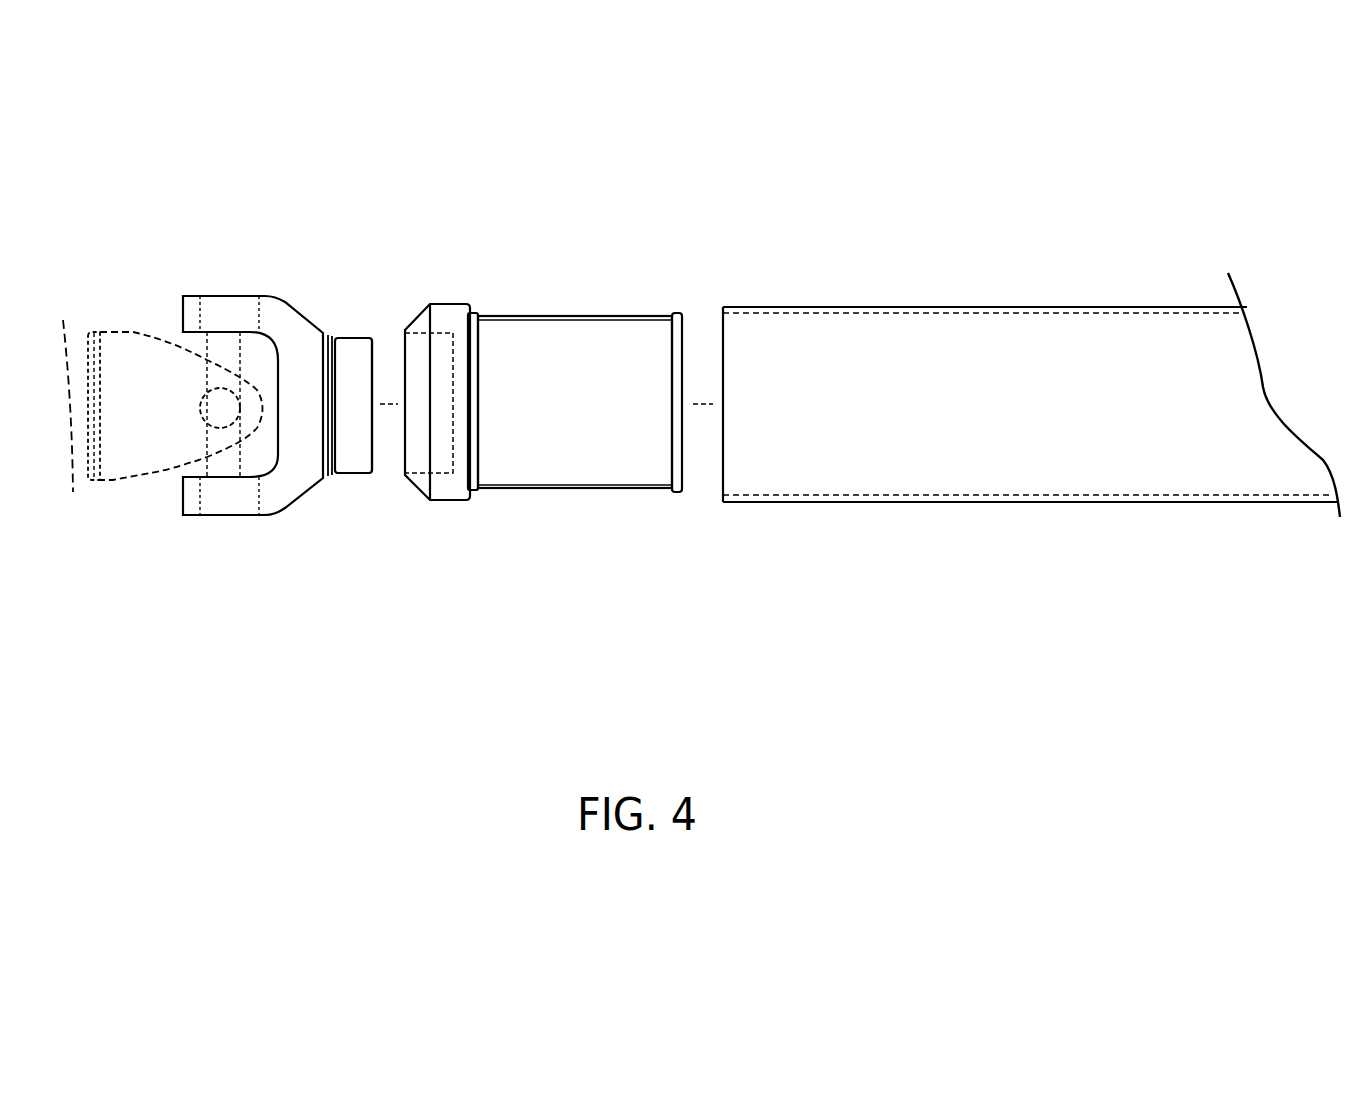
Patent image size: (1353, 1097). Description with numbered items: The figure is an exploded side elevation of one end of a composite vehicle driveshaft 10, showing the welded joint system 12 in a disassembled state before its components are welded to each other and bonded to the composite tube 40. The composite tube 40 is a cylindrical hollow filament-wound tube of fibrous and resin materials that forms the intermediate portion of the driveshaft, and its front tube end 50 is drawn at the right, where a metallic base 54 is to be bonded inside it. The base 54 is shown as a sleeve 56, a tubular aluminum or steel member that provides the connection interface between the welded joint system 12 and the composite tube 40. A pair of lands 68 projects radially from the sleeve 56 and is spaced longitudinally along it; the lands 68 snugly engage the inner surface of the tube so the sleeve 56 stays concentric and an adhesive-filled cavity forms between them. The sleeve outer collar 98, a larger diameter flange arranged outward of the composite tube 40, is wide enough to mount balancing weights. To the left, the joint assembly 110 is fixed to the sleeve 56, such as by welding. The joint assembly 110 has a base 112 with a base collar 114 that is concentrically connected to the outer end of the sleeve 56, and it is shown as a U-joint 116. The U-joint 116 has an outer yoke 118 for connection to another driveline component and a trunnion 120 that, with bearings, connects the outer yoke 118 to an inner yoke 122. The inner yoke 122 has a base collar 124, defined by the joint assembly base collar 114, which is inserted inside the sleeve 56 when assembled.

The composite vehicle driveshaft 10 is at (805, 103).
The welded joint system 12 is at (390, 645).
The composite tube 40 is at (1030, 598).
The front tube end 50 is at (778, 555).
The base 54 is at (644, 193).
The sleeve 56 is at (587, 248).
The lands 68 is at (476, 316).
The sleeve outer collar 98 is at (438, 520).
The joint assembly 110 is at (295, 562).
The base 112 is at (335, 268).
The base collar 114 is at (365, 273).
The U-joint 116 is at (181, 250).
The outer yoke 118 is at (147, 313).
The trunnion 120 is at (186, 470).
The inner yoke 122 is at (282, 533).
The inner yoke base collar 124 is at (362, 490).